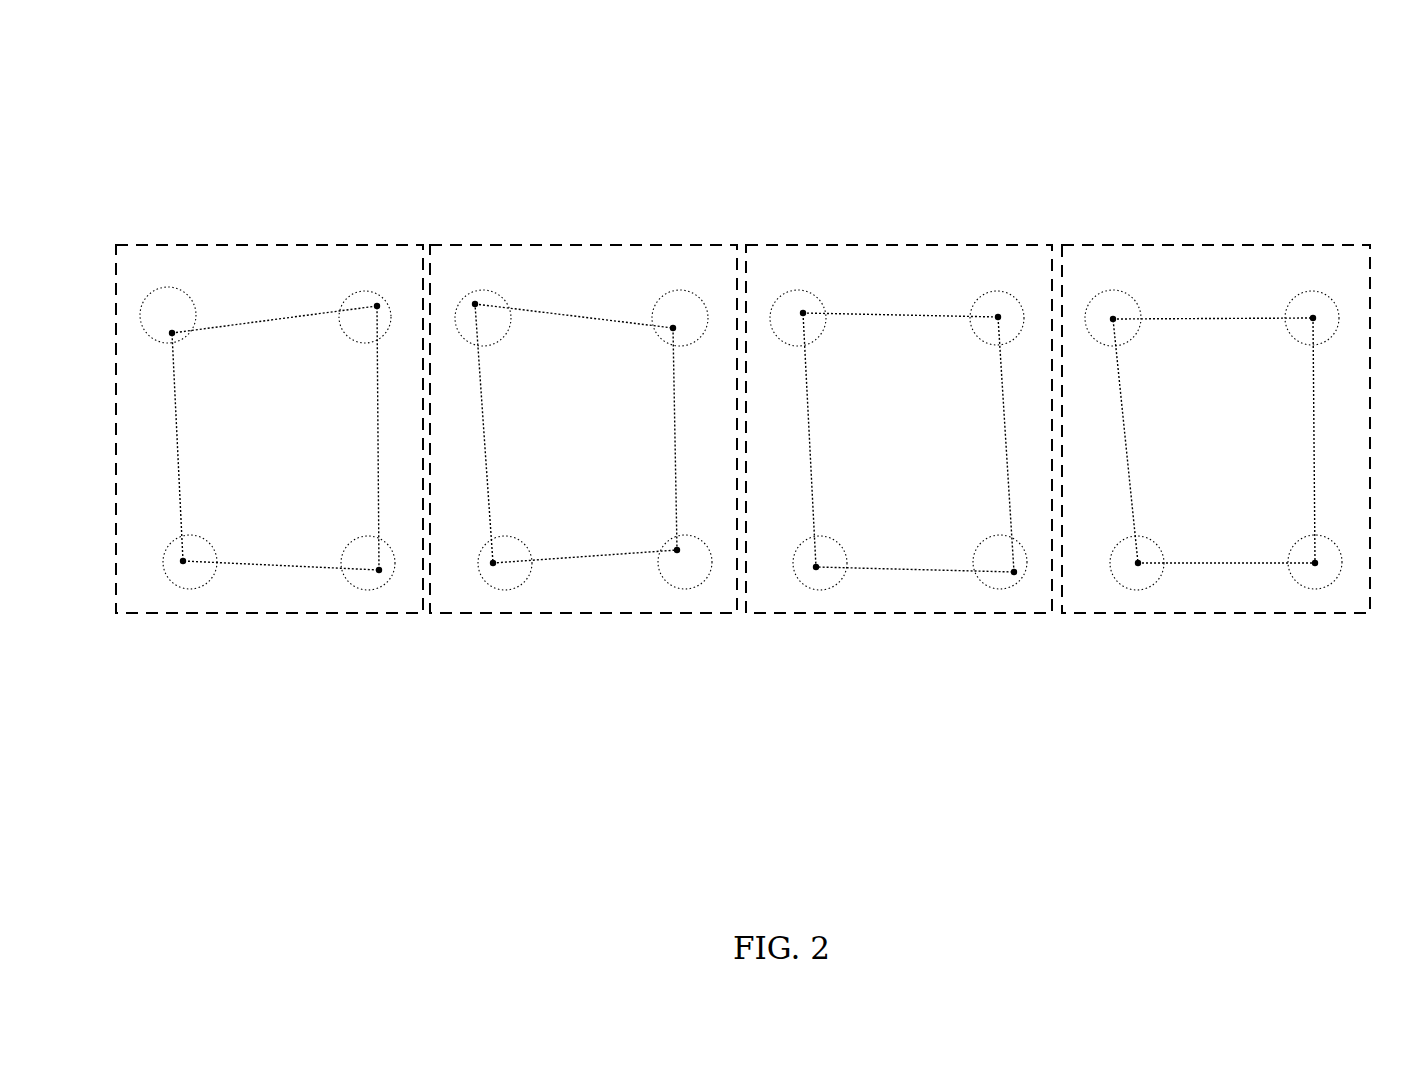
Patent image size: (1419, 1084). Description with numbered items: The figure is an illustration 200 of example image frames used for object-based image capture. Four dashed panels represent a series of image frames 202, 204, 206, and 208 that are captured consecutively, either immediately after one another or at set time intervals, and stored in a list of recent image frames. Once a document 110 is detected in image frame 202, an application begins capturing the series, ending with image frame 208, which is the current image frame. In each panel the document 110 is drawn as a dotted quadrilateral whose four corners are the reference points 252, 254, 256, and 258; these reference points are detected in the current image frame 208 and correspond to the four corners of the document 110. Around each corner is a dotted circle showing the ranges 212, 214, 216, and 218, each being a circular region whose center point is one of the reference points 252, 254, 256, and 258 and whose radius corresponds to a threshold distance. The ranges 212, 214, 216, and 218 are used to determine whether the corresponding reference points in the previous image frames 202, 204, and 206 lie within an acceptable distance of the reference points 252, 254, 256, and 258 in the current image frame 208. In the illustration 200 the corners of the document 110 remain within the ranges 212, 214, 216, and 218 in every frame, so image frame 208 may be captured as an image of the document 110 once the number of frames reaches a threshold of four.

The illustration 200 is at (144, 98).
The image frame 202 is at (253, 245).
The image frame 204 is at (567, 245).
The image frame 206 is at (883, 245).
The image frame 208 is at (1200, 245).
The document 110 is at (233, 323).
The range 212 is at (157, 292).
The range 214 is at (345, 298).
The range 216 is at (165, 562).
The range 218 is at (360, 585).
The reference point 252 is at (172, 333).
The reference point 254 is at (377, 306).
The reference point 256 is at (183, 561).
The reference point 258 is at (379, 570).